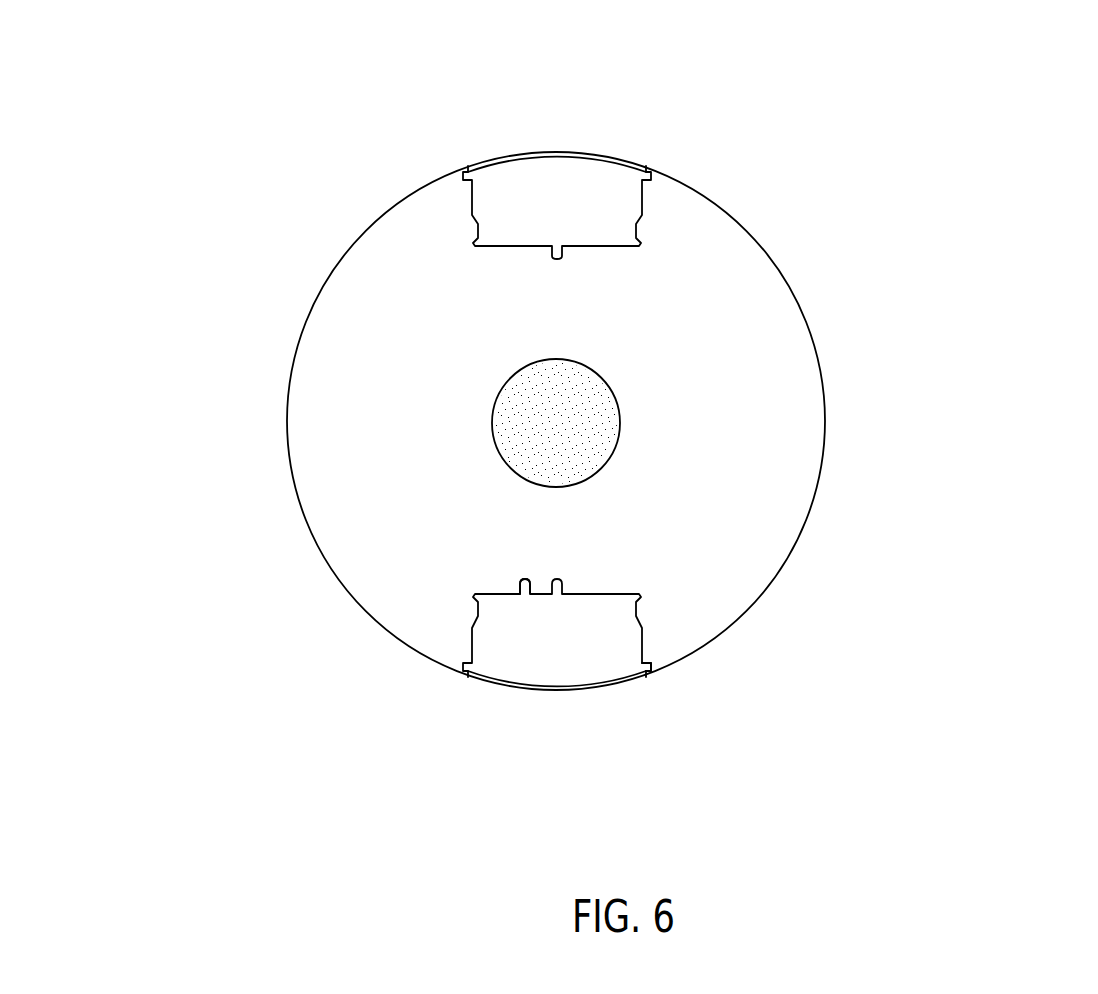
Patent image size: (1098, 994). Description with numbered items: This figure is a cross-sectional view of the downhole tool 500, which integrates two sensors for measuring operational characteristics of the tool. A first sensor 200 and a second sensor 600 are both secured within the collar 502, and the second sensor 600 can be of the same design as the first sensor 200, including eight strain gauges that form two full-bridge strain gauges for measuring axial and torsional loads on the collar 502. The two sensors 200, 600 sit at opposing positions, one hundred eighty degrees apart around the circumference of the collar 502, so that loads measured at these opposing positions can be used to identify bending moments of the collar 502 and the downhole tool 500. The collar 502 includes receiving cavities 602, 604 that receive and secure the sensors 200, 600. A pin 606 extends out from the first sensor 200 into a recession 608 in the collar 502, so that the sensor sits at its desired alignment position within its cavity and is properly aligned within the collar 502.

The downhole tool 500 is at (981, 100).
The collar 502 is at (793, 292).
The second sensor 600 is at (573, 190).
The receiving cavity 602 is at (454, 238).
The receiving cavity 604 is at (456, 652).
The pin 606 is at (520, 593).
The recession 608 is at (521, 578).
The first sensor 200 is at (573, 650).